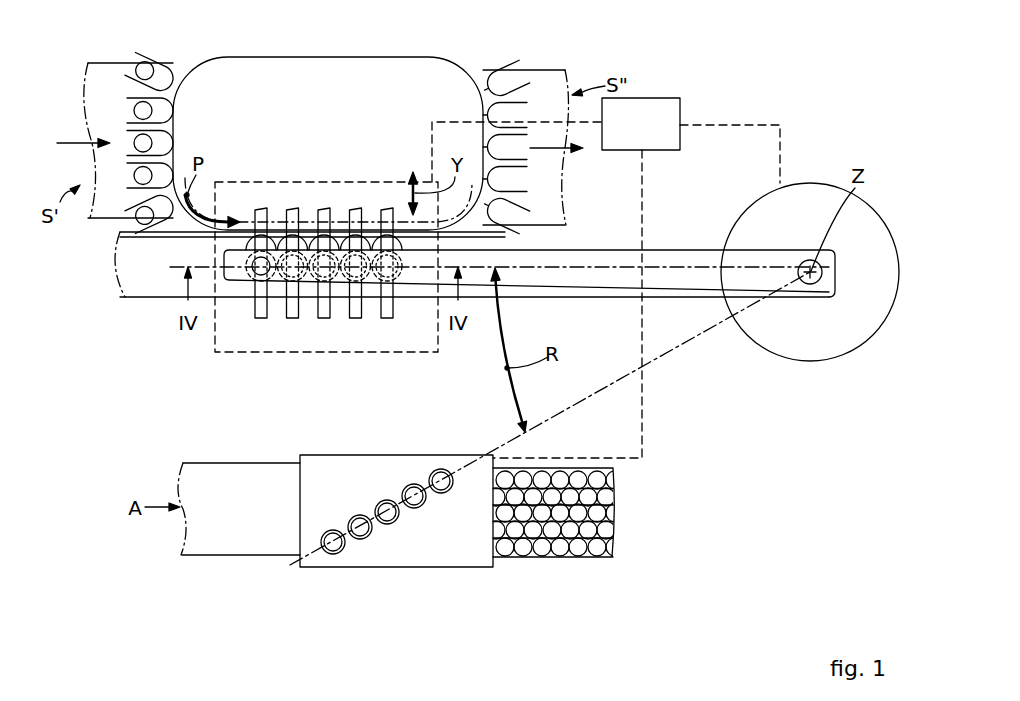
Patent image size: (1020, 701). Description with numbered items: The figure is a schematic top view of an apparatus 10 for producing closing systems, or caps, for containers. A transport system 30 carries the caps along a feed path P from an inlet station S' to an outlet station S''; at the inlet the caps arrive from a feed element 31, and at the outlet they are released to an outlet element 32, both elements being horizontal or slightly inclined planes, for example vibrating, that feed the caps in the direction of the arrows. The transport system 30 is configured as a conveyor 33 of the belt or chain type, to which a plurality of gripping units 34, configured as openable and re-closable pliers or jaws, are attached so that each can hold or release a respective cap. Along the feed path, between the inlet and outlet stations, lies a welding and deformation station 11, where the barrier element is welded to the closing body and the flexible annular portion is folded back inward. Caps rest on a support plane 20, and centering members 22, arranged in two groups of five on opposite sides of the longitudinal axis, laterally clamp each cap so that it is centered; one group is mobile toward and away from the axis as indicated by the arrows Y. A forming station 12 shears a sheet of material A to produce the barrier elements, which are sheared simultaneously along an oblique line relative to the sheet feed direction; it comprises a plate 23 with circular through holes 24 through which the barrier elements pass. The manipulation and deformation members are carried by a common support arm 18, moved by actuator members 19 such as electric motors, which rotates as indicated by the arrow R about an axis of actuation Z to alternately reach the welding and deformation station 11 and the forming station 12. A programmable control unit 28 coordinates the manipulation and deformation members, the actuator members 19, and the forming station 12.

The apparatus 10 is at (121, 35).
The welding and deformation station 11 is at (259, 158).
The forming station 12 is at (244, 579).
The support arm 18 is at (590, 262).
The actuator members 19 is at (817, 335).
The support plane 20 is at (140, 283).
The centering members 22 is at (325, 215).
The plate 23 is at (455, 567).
The through holes 24 is at (441, 478).
The programmable control unit 28 is at (606, 278).
The transport system 30 is at (109, 204).
The feed element 31 is at (97, 80).
The outlet element 32 is at (550, 82).
The conveyor 33 is at (445, 230).
The gripping units 34 is at (168, 72).